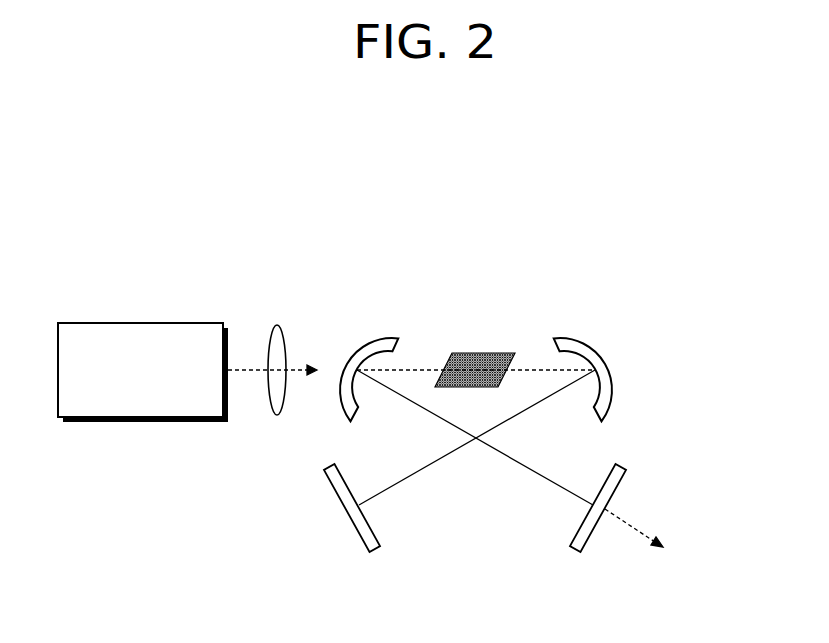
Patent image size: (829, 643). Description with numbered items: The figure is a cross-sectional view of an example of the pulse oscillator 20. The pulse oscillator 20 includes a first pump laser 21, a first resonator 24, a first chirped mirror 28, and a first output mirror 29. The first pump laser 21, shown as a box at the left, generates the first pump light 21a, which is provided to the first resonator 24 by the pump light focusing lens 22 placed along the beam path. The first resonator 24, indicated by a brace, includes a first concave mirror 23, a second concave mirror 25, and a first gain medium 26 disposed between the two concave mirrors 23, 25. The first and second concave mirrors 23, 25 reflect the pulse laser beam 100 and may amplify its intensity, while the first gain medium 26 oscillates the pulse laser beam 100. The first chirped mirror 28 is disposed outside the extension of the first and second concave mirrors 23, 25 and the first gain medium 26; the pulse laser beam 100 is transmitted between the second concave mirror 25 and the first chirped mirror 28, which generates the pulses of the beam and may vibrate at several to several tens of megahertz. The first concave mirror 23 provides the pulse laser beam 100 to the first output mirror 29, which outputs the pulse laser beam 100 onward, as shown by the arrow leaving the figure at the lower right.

The pulse oscillator 20 is at (677, 285).
The first pump laser 21 is at (187, 322).
The first pump light 21a is at (250, 374).
The pump light focusing lens 22 is at (277, 324).
The first concave mirror 23 is at (373, 337).
The first resonator 24 is at (588, 251).
The second concave mirror 25 is at (579, 337).
The first gain medium 26 is at (476, 352).
The first chirped mirror 28 is at (360, 541).
The first output mirror 29 is at (590, 541).
The pulse laser beam 100 is at (493, 450).